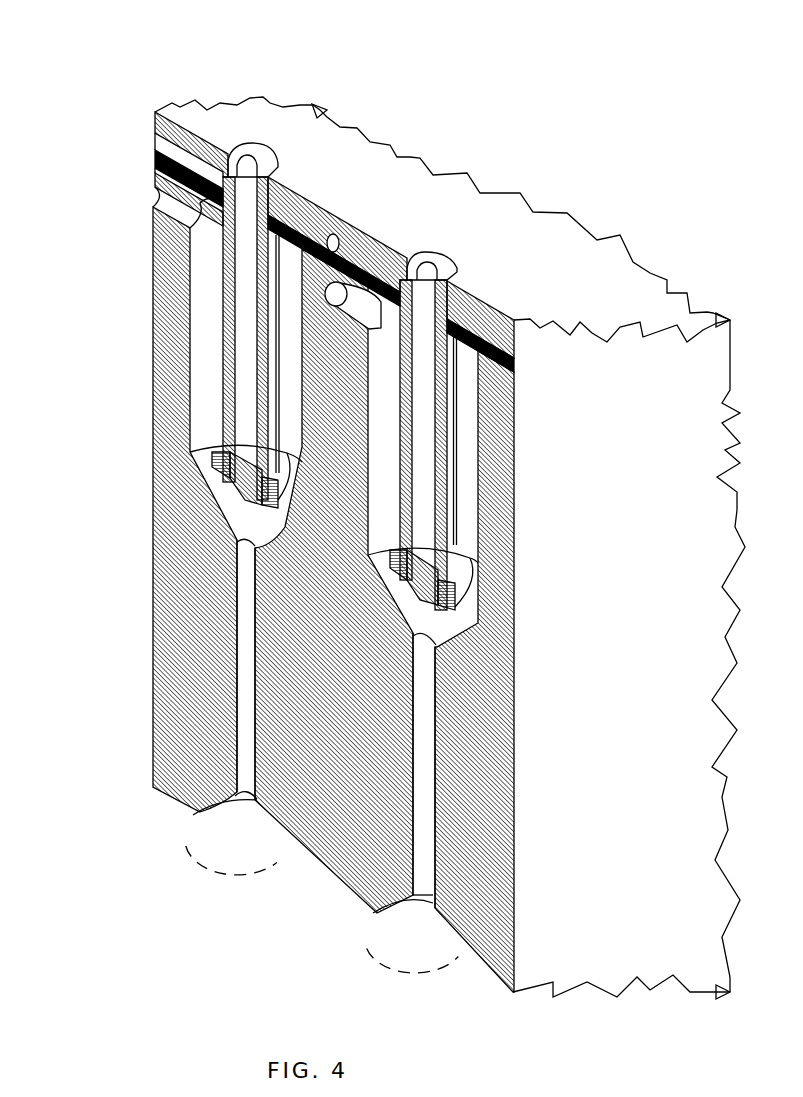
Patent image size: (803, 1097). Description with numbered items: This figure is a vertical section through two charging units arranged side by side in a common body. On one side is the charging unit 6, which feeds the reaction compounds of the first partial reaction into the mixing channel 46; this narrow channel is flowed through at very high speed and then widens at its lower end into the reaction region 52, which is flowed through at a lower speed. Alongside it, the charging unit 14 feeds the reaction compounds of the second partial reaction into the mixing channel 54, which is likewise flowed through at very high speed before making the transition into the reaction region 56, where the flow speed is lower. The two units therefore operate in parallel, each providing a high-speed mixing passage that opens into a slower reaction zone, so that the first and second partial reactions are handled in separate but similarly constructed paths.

The charging unit 14 is at (304, 352).
The charging unit 6 is at (482, 405).
The mixing channel 46 is at (424, 837).
The reaction region 52 is at (418, 943).
The mixing channel 54 is at (246, 758).
The reaction region 56 is at (246, 838).